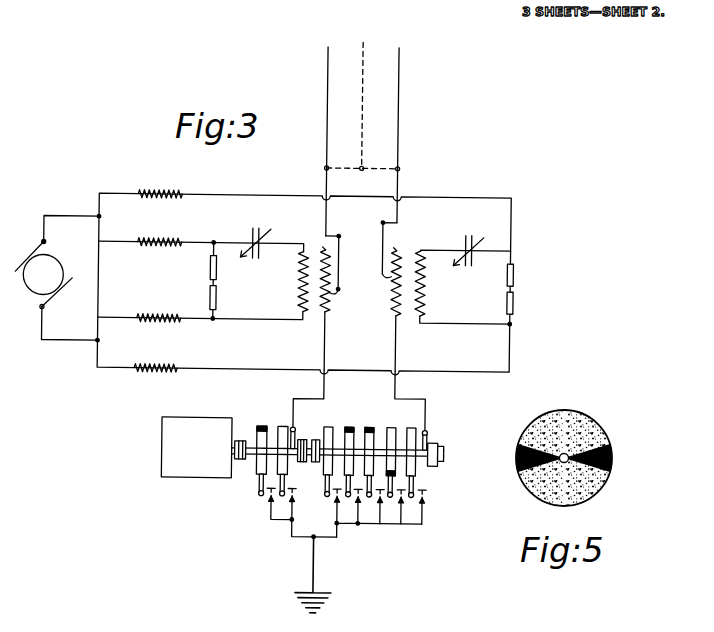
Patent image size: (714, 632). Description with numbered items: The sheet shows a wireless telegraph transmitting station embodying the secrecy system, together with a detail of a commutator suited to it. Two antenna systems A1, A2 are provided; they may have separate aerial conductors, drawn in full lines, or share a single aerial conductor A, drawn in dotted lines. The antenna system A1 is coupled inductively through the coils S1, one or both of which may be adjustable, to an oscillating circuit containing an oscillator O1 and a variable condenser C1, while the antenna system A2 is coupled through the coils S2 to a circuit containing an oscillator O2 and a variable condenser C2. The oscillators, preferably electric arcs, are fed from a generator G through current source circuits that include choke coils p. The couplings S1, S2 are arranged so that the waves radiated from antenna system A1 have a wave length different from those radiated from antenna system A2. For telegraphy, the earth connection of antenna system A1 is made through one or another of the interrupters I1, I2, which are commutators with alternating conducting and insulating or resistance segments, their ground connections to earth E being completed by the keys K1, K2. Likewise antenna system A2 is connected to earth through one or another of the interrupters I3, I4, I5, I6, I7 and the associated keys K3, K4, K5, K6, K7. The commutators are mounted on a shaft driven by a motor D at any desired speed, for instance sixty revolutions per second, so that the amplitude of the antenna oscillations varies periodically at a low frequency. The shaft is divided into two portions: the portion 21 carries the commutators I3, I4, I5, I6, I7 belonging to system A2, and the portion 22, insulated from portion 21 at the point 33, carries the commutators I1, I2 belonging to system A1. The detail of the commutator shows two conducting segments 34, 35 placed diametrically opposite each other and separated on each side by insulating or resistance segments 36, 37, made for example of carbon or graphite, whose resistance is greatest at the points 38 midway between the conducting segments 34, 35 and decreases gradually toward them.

In FIG. 3, the shaft portion 21 is at (418, 457).
In FIG. 3, the shaft portion 22 is at (252, 455).
In FIG. 3, the insulation 33 is at (300, 436).
In FIG. 5, the conducting segment 34 is at (517, 458).
In FIG. 5, the conducting segment 35 is at (612, 460).
In FIG. 5, the insulating or resistance segment 36 is at (543, 492).
In FIG. 5, the insulating or resistance segment 37 is at (536, 419).
In FIG. 5, the midpoint of resistance segment 38 is at (565, 410).
In FIG. 3, the common aerial conductor A is at (362, 112).
In FIG. 3, the antenna system A1 is at (329, 110).
In FIG. 3, the antenna system A2 is at (399, 115).
In FIG. 3, the variable condenser C1 is at (257, 227).
In FIG. 3, the variable condenser C2 is at (468, 234).
In FIG. 3, the motor D is at (196, 447).
In FIG. 3, the earth E is at (321, 578).
In FIG. 3, the generator G is at (56, 277).
In FIG. 3, the interrupter I1 is at (262, 427).
In FIG. 3, the interrupter I2 is at (283, 427).
In FIG. 5, the interrupter I2 is at (597, 422).
In FIG. 3, the interrupter I3 is at (328, 427).
In FIG. 3, the interrupter I4 is at (349, 427).
In FIG. 3, the interrupter I5 is at (370, 427).
In FIG. 3, the interrupter I6 is at (391, 427).
In FIG. 3, the interrupter I7 is at (412, 427).
In FIG. 3, the key K1 is at (263, 497).
In FIG. 3, the key K2 is at (284, 498).
In FIG. 3, the key K3 is at (328, 498).
In FIG. 3, the key K4 is at (349, 498).
In FIG. 3, the key K5 is at (370, 498).
In FIG. 3, the key K6 is at (391, 498).
In FIG. 3, the key K7 is at (412, 498).
In FIG. 3, the oscillator O1 is at (205, 280).
In FIG. 3, the oscillator O2 is at (523, 289).
In FIG. 3, the choke coil p is at (158, 281).
In FIG. 3, the coupling coils S1 is at (306, 308).
In FIG. 3, the coupling coils S2 is at (410, 311).